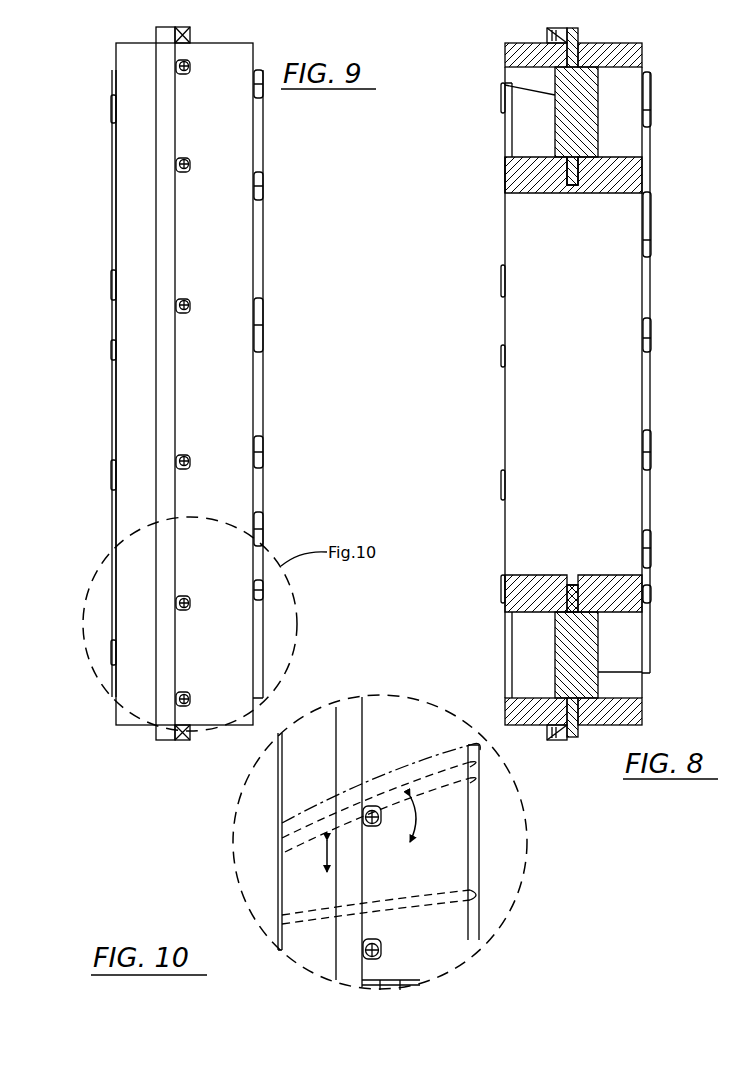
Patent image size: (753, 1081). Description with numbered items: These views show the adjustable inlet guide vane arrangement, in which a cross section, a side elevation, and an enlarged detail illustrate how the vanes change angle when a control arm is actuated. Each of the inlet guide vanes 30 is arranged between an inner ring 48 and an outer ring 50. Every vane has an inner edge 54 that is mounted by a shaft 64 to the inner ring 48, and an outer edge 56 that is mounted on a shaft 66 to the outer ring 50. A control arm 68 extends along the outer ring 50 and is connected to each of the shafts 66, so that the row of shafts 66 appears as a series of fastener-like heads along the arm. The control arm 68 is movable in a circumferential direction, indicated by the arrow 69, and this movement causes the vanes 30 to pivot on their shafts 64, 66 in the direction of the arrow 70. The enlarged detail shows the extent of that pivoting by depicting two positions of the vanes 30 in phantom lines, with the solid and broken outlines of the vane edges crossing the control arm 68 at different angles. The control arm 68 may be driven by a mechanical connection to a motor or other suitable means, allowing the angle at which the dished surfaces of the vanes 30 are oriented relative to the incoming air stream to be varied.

In FIG. 8, the inlet guide vanes 30 is at (600, 126).
In FIG. 10, the inlet guide vanes 30 is at (418, 750).
In FIG. 8, the inner ring 48 is at (522, 168).
In FIG. 9, the outer ring 50 is at (223, 283).
In FIG. 8, the outer ring 50 is at (645, 60).
In FIG. 10, the outer ring 50 is at (378, 841).
In FIG. 8, the inner edge 54 is at (600, 163).
In FIG. 8, the outer edge 56 is at (590, 67).
In FIG. 8, the shaft 64 is at (570, 182).
In FIG. 9, the shaft 66 is at (176, 67).
In FIG. 8, the shaft 66 is at (580, 43).
In FIG. 10, the shaft 66 is at (372, 826).
In FIG. 9, the control arm 68 is at (156, 372).
In FIG. 8, the control arm 68 is at (547, 35).
In FIG. 10, the control arm 68 is at (363, 735).
In FIG. 10, the arrow 69 is at (322, 858).
In FIG. 10, the arrow 70 is at (420, 816).